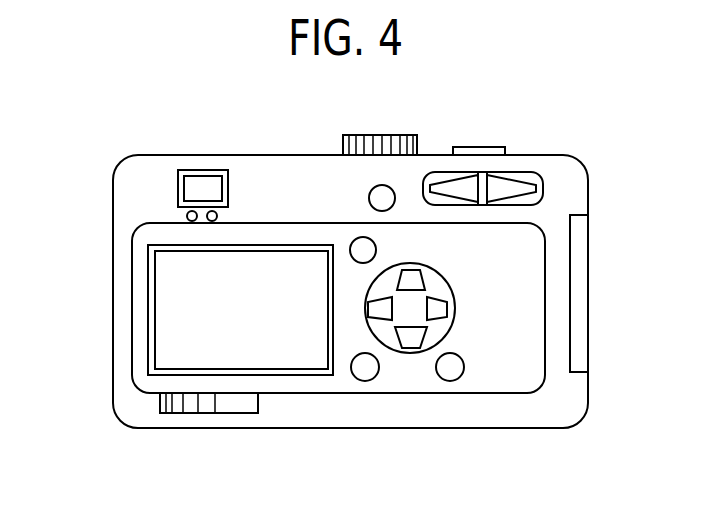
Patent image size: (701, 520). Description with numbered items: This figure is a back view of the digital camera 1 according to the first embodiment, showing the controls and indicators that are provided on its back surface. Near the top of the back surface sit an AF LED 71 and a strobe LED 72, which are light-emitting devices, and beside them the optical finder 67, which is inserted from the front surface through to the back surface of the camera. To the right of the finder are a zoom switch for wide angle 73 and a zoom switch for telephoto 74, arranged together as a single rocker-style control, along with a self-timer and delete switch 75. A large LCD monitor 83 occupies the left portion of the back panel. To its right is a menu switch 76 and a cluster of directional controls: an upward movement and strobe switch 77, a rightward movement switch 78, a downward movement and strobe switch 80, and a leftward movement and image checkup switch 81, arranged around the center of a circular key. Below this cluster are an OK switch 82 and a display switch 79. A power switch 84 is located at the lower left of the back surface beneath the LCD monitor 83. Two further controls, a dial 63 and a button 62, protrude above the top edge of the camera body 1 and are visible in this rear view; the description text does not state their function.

The digital camera 1 is at (76, 367).
The power button 62 is at (490, 152).
The mode dial 63 is at (372, 134).
The optical finder 67 is at (200, 183).
The AF LED 71 is at (187, 216).
The strobe LED 72 is at (217, 216).
The zoom switch for wide angle 73 is at (433, 190).
The zoom switch for telephoto 74 is at (528, 190).
The self-timer and delete switch 75 is at (368, 198).
The menu switch 76 is at (375, 253).
The upward movement and strobe switch 77 is at (413, 272).
The rightward movement switch 78 is at (445, 308).
The display switch 79 is at (450, 381).
The downward movement and strobe switch 80 is at (412, 342).
The leftward movement and image checkup switch 81 is at (370, 304).
The OK switch 82 is at (365, 381).
The LCD monitor 83 is at (160, 317).
The power switch 84 is at (172, 410).